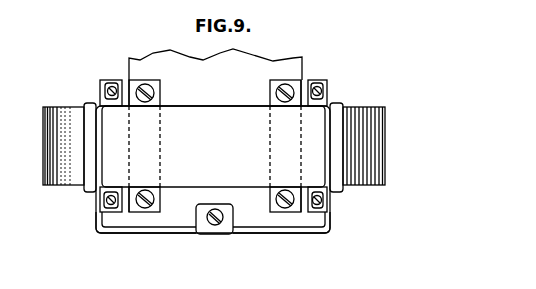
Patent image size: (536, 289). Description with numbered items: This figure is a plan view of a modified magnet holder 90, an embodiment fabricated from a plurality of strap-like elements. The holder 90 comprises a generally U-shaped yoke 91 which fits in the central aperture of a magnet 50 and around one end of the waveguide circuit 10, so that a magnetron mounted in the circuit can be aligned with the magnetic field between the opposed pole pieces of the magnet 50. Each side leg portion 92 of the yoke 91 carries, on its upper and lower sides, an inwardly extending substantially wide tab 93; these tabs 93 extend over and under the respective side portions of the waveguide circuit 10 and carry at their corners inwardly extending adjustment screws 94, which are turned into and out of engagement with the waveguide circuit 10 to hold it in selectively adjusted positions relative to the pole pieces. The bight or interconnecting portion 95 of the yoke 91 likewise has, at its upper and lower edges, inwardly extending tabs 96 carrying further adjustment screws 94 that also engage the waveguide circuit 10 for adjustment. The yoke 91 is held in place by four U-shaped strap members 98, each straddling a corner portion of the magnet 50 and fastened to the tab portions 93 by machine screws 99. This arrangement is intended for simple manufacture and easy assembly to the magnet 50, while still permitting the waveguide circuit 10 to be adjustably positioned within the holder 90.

The waveguide circuit 10 is at (218, 94).
The magnet 50 is at (223, 154).
The magnet holder 90 is at (375, 92).
The U-shaped yoke 91 is at (329, 220).
The side leg portion 92 is at (110, 80).
The tab 93 is at (161, 81).
The adjustment screw 94 is at (145, 86).
The bight portion 95 is at (265, 234).
The tab 96 is at (199, 215).
The U-shaped strap member 98 is at (88, 140).
The machine screw 99 is at (108, 90).